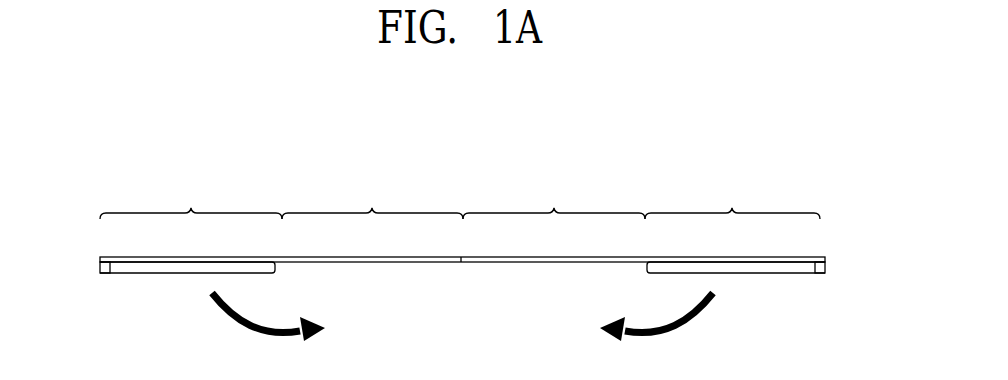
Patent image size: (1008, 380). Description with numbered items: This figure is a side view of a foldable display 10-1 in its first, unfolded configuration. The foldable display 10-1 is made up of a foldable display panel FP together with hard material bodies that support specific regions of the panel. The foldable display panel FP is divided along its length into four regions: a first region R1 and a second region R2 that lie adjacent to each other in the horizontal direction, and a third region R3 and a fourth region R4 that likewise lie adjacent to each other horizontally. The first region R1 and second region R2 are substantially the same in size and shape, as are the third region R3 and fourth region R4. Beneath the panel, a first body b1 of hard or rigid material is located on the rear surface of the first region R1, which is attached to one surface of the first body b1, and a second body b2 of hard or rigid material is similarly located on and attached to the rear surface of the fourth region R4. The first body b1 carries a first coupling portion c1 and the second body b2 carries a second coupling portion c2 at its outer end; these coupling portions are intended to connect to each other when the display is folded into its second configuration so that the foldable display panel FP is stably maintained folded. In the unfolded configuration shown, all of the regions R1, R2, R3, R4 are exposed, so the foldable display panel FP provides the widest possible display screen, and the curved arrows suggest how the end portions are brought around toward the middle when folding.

The foldable display 10-1 is at (794, 153).
The first region R1 is at (191, 200).
The second region R2 is at (372, 200).
The third region R3 is at (554, 200).
The fourth region R4 is at (732, 200).
The first body b1 is at (186, 274).
The second body b2 is at (738, 274).
The first coupling portion c1 is at (101, 274).
The second coupling portion c2 is at (820, 274).
The foldable display panel FP is at (461, 263).